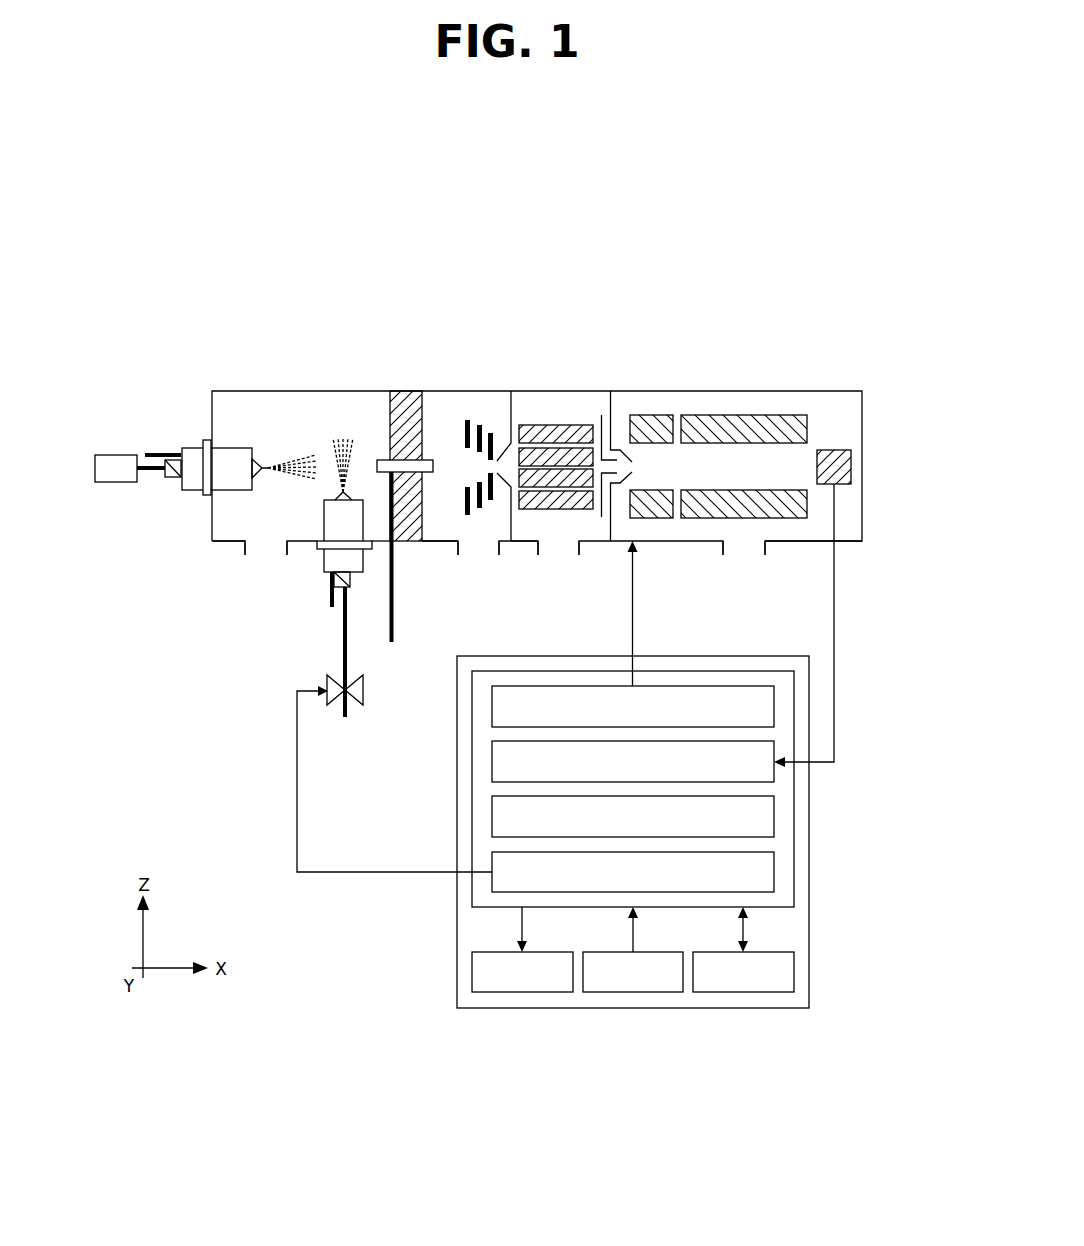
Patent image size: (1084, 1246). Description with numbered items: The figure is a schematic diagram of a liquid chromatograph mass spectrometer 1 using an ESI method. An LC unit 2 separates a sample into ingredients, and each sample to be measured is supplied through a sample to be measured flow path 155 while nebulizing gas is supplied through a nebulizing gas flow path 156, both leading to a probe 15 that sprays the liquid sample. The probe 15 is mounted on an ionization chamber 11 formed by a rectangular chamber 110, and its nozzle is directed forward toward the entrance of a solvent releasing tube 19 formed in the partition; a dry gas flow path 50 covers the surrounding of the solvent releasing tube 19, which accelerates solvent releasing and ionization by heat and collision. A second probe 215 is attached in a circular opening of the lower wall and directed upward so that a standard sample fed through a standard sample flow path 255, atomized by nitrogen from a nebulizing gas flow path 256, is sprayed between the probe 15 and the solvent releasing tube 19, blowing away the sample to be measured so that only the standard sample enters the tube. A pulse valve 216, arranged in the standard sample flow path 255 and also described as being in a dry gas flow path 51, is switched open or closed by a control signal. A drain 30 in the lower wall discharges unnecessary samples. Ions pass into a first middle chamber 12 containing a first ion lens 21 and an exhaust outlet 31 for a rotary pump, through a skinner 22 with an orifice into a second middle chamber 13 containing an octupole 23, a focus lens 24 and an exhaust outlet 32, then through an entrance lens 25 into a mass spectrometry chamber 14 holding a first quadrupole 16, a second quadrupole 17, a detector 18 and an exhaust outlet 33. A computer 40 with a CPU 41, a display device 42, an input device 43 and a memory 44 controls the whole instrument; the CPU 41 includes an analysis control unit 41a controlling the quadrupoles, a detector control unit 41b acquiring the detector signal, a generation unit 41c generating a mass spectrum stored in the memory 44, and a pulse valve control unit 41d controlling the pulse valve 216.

The liquid chromatograph mass spectrometer 1 is at (524, 222).
The LC unit 2 is at (113, 455).
The ionization chamber 11 is at (320, 407).
The first middle chamber 12 is at (448, 407).
The second middle chamber 13 is at (522, 532).
The mass spectrometry chamber 14 is at (790, 400).
The probe 15 is at (190, 448).
The first quadrupole 16 is at (653, 416).
The second quadrupole 17 is at (740, 416).
The detector 18 is at (833, 450).
The solvent releasing tube 19 is at (403, 460).
The first ion lens 21 is at (475, 418).
The skinner 22 is at (508, 407).
The octupole 23 is at (547, 425).
The focus lens 24 is at (602, 427).
The entrance lens 25 is at (608, 403).
The drain 30 is at (260, 552).
The exhaust outlet 31 is at (477, 553).
The exhaust outlet 32 is at (558, 552).
The exhaust outlet 33 is at (745, 552).
The computer 40 is at (458, 942).
The CPU 41 is at (685, 671).
The analysis control unit 41a is at (475, 707).
The detector control unit 41b is at (475, 763).
The generation unit 41c is at (774, 815).
The pulse valve control unit 41d is at (774, 870).
The display device 42 is at (522, 993).
The input device 43 is at (633, 993).
The memory 44 is at (743, 993).
The dry gas flow path 50 is at (382, 458).
The dry gas flow path (standard sample flow path) 51 is at (395, 607).
The chamber 110 is at (257, 391).
The sample to be measured flow path 155 is at (148, 471).
The nebulizing gas flow path 156 is at (158, 455).
The probe 215 is at (322, 560).
The pulse valve 216 is at (333, 707).
The standard sample flow path 255 is at (348, 646).
The nebulizing gas flow path 256 is at (330, 590).